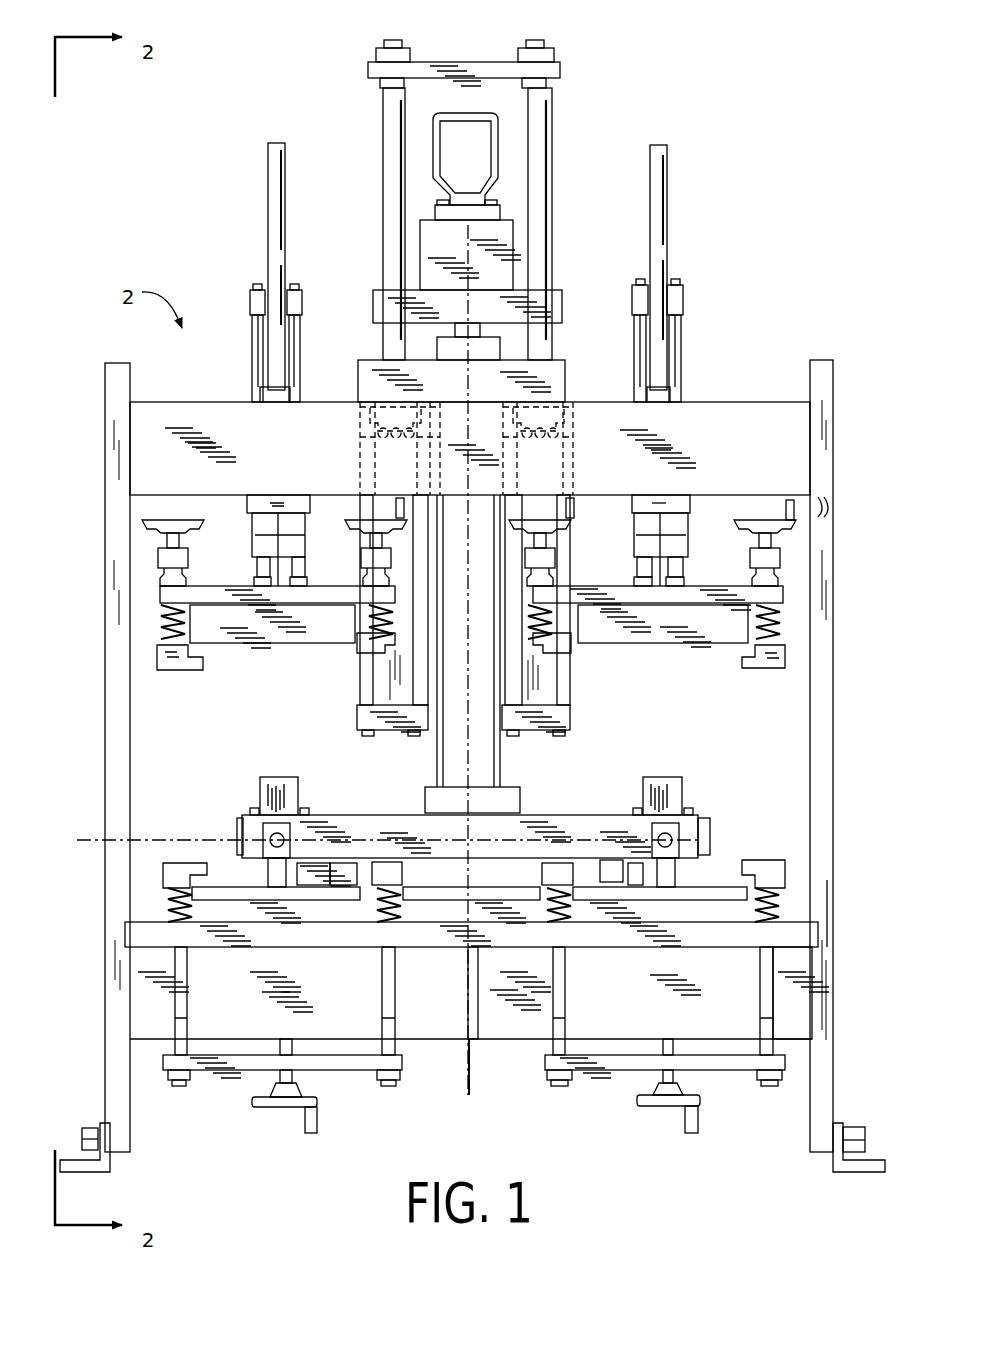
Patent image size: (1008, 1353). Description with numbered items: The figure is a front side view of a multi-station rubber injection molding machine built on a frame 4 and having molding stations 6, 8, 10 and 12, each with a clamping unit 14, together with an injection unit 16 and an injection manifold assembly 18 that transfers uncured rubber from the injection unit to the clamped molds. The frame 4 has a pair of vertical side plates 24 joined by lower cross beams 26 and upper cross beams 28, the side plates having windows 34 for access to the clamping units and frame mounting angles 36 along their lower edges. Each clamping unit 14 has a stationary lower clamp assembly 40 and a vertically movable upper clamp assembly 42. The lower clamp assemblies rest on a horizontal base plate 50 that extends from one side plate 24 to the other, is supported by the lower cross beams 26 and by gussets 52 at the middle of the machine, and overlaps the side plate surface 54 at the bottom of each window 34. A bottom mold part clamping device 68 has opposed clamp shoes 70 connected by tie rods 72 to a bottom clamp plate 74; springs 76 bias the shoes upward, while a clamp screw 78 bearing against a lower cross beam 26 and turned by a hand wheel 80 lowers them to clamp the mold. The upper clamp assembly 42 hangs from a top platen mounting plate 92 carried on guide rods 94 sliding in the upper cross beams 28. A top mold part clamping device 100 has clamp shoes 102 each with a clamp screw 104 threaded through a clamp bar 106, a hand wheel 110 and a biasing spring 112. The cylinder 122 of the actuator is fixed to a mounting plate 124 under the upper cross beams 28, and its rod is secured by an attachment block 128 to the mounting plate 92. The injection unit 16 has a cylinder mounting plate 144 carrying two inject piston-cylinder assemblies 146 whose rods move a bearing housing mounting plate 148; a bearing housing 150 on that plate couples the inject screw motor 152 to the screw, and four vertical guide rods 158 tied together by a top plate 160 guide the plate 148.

The frame 4 is at (472, 745).
The molding station 6 is at (467, 673).
The molding station 8 is at (483, 957).
The molding station 10 is at (475, 673).
The molding station 12 is at (476, 959).
The clamping unit 14 is at (475, 738).
The injection unit 16 is at (522, 547).
The injection manifold assembly 18 is at (614, 800).
The vertical side plates 24 is at (113, 363).
The lower cross beams 26 is at (438, 1043).
The upper cross beams 28 is at (738, 402).
The windows 34 is at (823, 508).
The frame mounting angles 36 is at (100, 1172).
The lower clamp assembly 40 is at (717, 880).
The upper clamp assembly 42 is at (640, 645).
The base plate 50 is at (310, 947).
The gussets 52 is at (478, 962).
The side plate surface 54 is at (827, 880).
The bottom mold part clamping device 68 is at (305, 1126).
The clamp shoes 70 is at (187, 866).
The tie rods 72 is at (188, 994).
The bottom clamp plate 74 is at (360, 1072).
The springs 76 is at (192, 903).
The clamp screw 78 is at (330, 1087).
The hand wheel 80 is at (272, 1097).
The top platen mounting plate 92 is at (195, 583).
The guide rods 94 is at (283, 152).
The top mold part clamping device 100 is at (723, 512).
The clamp shoes 102 is at (801, 690).
The clamp screw 104 is at (738, 598).
The upper clamp plate or bar 106 is at (782, 562).
The hand wheel 110 is at (743, 520).
The spring 112 is at (795, 660).
The cylinder 122 is at (250, 330).
The mounting plate 124 is at (299, 512).
The attachment block 128 is at (302, 580).
The cylinder mounting plate 144 is at (567, 380).
The inject piston-cylinder assemblies 146 is at (357, 703).
The bearing housing mounting plate 148 is at (562, 302).
The bearing housing 150 is at (513, 250).
The inject screw motor 152 is at (425, 115).
The vertical guide rods 158 is at (382, 148).
The top plate 160 is at (443, 62).